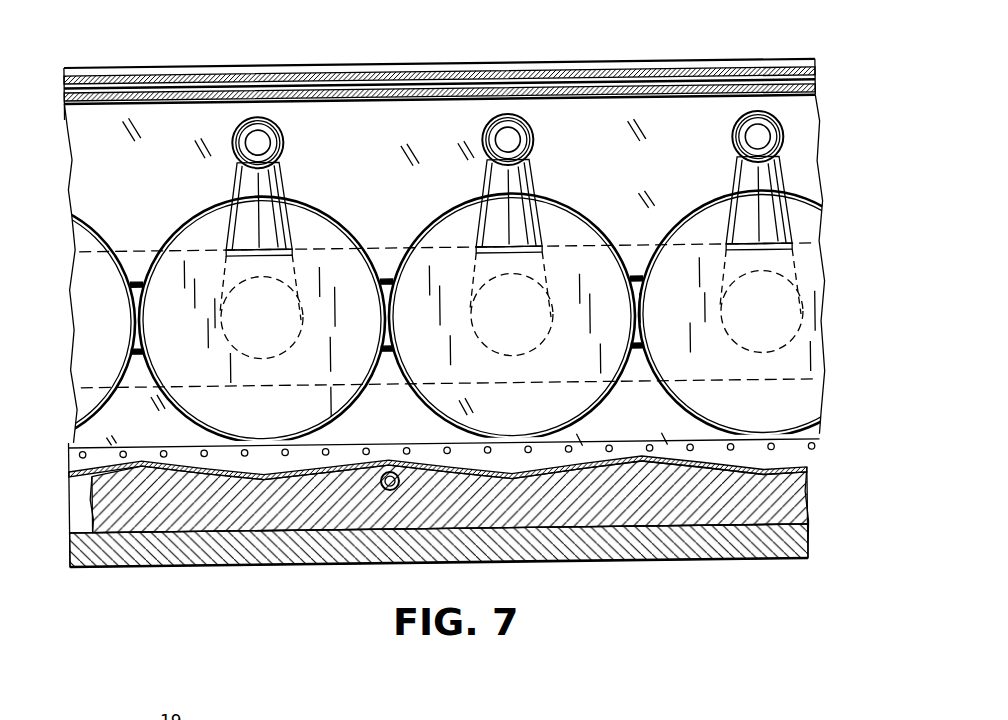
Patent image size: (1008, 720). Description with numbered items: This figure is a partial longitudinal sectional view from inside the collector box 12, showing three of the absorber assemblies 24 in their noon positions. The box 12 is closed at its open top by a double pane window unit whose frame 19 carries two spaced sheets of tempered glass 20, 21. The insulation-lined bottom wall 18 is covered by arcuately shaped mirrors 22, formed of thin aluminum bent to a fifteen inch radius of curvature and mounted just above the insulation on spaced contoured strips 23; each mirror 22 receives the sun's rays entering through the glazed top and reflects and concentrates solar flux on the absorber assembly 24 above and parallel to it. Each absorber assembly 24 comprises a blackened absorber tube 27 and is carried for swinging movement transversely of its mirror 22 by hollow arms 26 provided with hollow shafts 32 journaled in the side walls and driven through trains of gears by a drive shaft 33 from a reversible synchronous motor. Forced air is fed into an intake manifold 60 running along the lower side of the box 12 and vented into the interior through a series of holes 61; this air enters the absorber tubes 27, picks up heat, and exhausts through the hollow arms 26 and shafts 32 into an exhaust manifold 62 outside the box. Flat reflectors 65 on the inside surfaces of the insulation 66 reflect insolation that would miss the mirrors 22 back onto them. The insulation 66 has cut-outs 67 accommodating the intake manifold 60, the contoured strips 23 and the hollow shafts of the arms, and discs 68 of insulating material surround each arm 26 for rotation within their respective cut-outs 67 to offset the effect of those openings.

The collector box 12 is at (858, 62).
The bottom wall 18 is at (745, 568).
The frame 19 is at (460, 70).
The tempered glass sheet 20 is at (288, 80).
The tempered glass sheet 21 is at (549, 99).
The arcuately shaped mirror 22 is at (263, 478).
The contoured strip 23 is at (77, 512).
The absorber assembly 24 is at (476, 137).
The hollow arm 26 is at (275, 210).
The absorber tube 27 is at (244, 145).
The hollow shaft 32 is at (219, 325).
The drive shaft 33 is at (389, 476).
The intake manifold 60 is at (680, 447).
The holes 61 is at (160, 453).
The exhaust manifold 62 is at (396, 233).
The flat reflector 65 is at (98, 142).
The insulation 66 is at (92, 182).
The cut-out 67 is at (157, 254).
The insulating disc 68 is at (587, 240).